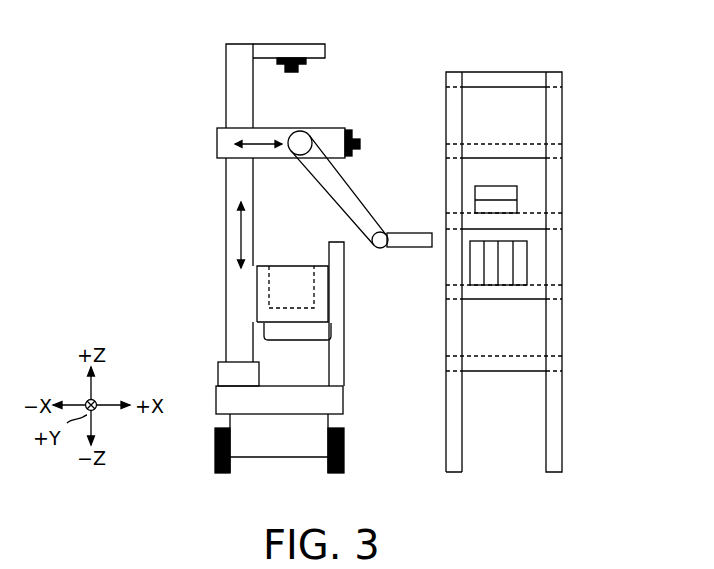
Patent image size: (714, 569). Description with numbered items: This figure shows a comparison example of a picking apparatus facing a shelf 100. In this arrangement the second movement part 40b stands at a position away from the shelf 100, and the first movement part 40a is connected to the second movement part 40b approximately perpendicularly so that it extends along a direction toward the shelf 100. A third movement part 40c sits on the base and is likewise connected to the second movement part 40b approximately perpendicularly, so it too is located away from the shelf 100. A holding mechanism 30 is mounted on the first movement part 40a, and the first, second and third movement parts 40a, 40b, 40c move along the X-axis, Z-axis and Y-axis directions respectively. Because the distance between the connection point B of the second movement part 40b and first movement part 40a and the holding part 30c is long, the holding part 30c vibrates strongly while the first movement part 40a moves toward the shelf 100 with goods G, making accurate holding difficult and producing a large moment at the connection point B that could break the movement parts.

The second movement part 40b is at (242, 97).
The first movement part 40a is at (232, 139).
The connection point B is at (220, 162).
The holding mechanism 30 is at (316, 190).
The holding part 30c is at (412, 247).
The third movement part 40c is at (235, 380).
The shelf 100 is at (557, 80).
The goods (articles) G is at (523, 258).